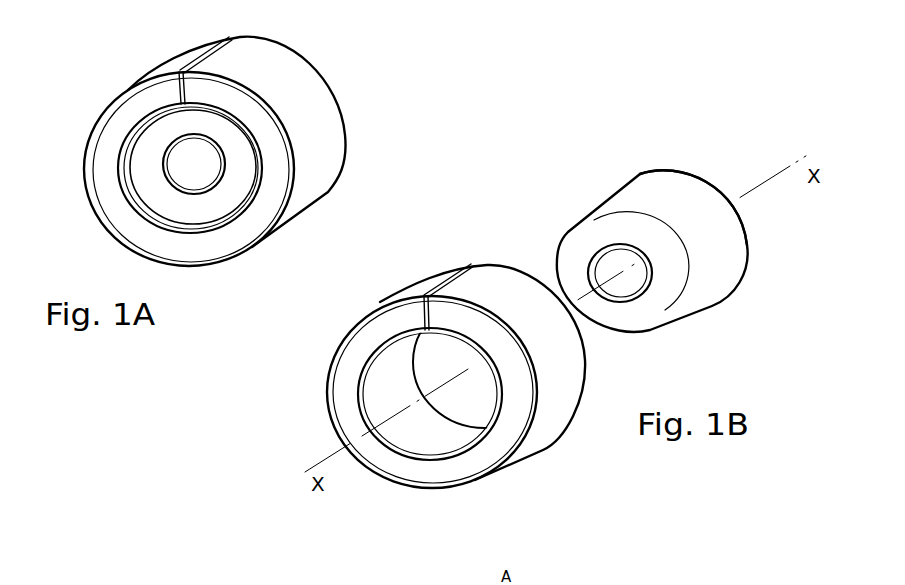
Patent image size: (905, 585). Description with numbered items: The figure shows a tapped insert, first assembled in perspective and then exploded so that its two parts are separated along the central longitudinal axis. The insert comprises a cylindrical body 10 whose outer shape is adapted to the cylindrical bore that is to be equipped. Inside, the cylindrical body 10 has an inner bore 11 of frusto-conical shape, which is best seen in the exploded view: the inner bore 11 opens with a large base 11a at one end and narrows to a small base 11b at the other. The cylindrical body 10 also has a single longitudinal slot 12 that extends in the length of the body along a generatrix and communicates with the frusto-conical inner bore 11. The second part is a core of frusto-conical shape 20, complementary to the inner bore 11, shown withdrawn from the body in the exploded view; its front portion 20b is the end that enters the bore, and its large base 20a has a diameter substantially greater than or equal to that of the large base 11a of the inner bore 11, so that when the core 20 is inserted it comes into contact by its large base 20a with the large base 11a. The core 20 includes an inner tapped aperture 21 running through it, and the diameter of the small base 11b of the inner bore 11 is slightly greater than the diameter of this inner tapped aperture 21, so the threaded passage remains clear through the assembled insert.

In FIG. 1A, the cylindrical body 10 is at (354, 101).
In FIG. 1B, the cylindrical body 10 is at (547, 464).
In FIG. 1A, the inner bore 11 is at (143, 206).
In FIG. 1B, the inner bore 11 is at (477, 409).
In FIG. 1B, the large base of the frusto-conical inner bore 11a is at (430, 366).
In FIG. 1B, the small base of the frusto-conical inner bore 11b is at (419, 458).
In FIG. 1A, the slot 12 is at (180, 70).
In FIG. 1B, the slot 12 is at (423, 294).
In FIG. 1B, the core of frusto-conical shape 20 is at (614, 176).
In FIG. 1B, the large base of the core 20a is at (711, 169).
In FIG. 1A, the front portion of sleeve 20b is at (212, 212).
In FIG. 1B, the front portion of sleeve 20b is at (581, 236).
In FIG. 1A, the inner tapped aperture 21 is at (186, 166).
In FIG. 1B, the inner tapped aperture 21 is at (626, 288).